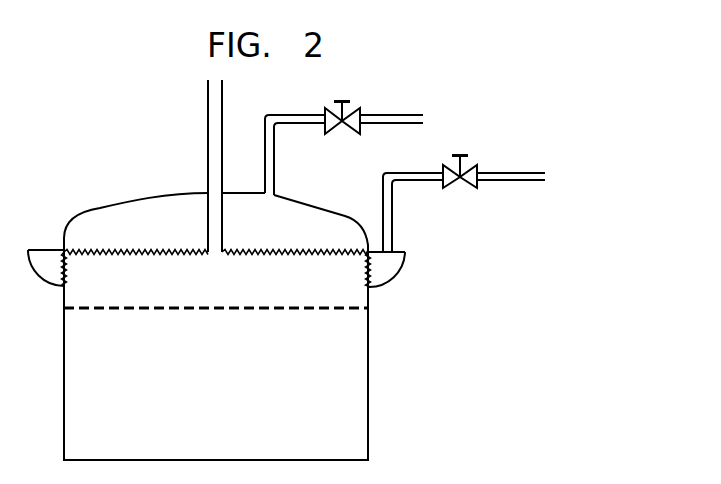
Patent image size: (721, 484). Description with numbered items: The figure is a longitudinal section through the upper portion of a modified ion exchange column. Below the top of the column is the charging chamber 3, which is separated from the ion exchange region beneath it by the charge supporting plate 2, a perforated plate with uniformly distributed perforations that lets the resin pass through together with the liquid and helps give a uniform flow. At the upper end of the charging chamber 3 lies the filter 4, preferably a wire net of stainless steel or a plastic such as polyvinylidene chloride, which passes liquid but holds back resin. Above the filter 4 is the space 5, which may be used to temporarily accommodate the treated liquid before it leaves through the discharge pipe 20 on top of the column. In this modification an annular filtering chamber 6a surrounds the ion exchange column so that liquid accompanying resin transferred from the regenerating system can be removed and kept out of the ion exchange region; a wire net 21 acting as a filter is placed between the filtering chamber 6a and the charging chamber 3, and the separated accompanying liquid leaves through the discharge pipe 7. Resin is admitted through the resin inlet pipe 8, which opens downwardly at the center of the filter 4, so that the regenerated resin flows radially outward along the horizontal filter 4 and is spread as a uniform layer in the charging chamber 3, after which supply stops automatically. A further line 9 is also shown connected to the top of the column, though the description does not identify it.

The charge supporting plate 2 is at (242, 310).
The charging chamber 3 is at (157, 298).
The filter 4 is at (129, 255).
The space within the annular filtering chamber 5 is at (163, 207).
The annular filtering chamber 6a is at (385, 270).
The discharge pipe 7 is at (392, 210).
The resin inlet pipe 8 is at (222, 108).
The pipe 9 is at (274, 165).
The discharge pipe 20 is at (346, 100).
The wire net 21 is at (62, 280).